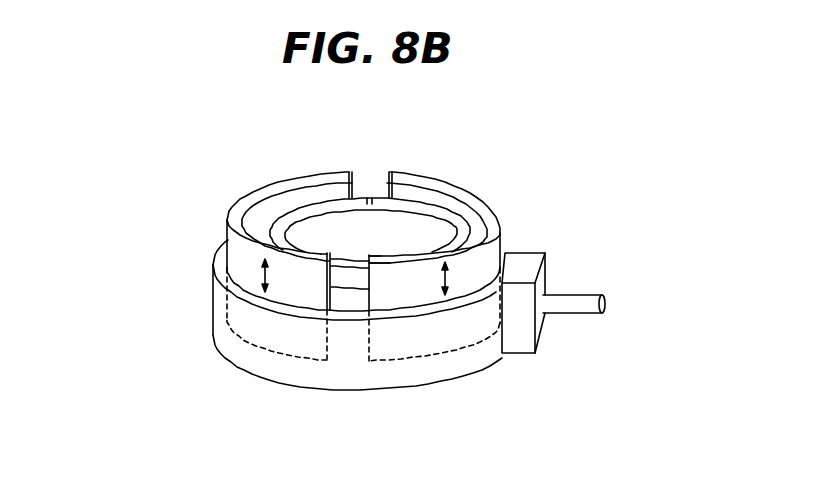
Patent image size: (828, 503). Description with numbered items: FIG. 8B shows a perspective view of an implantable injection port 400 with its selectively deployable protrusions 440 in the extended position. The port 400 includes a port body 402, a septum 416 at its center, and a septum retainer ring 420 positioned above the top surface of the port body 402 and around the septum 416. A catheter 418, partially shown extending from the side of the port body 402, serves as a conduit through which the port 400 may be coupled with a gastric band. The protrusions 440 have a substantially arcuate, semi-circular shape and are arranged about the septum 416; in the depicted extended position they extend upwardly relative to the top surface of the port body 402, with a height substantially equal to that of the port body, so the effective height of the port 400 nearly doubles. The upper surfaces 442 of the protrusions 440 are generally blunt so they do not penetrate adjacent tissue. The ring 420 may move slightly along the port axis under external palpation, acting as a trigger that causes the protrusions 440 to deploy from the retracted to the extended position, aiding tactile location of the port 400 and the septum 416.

The injection port 400 is at (484, 131).
The port body 402 is at (342, 362).
The septum 416 is at (400, 224).
The catheter 418 is at (586, 293).
The septum retainer ring 420 is at (367, 198).
The protrusions 440 is at (240, 255).
The upper surfaces 442 is at (284, 182).